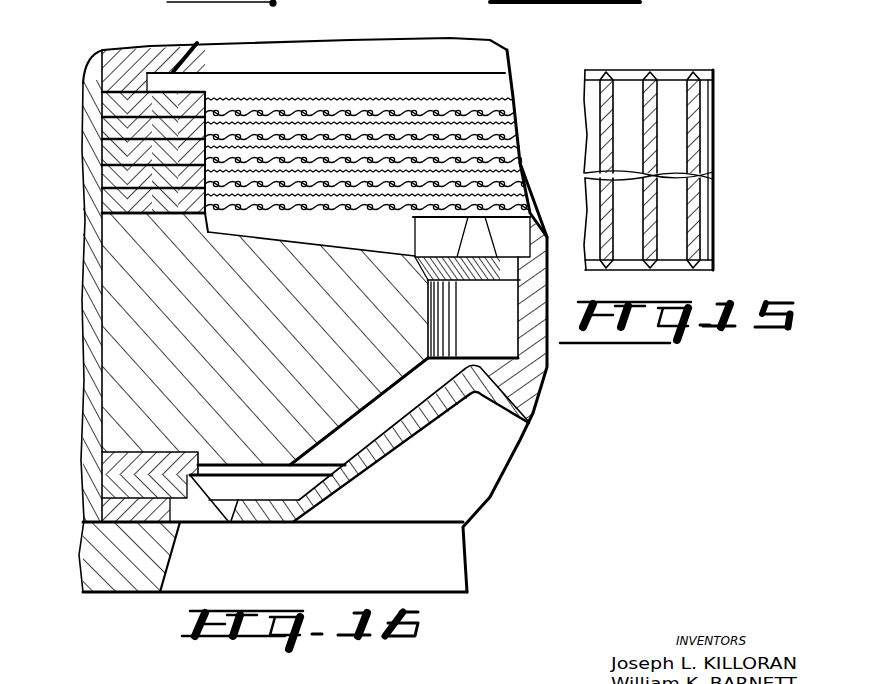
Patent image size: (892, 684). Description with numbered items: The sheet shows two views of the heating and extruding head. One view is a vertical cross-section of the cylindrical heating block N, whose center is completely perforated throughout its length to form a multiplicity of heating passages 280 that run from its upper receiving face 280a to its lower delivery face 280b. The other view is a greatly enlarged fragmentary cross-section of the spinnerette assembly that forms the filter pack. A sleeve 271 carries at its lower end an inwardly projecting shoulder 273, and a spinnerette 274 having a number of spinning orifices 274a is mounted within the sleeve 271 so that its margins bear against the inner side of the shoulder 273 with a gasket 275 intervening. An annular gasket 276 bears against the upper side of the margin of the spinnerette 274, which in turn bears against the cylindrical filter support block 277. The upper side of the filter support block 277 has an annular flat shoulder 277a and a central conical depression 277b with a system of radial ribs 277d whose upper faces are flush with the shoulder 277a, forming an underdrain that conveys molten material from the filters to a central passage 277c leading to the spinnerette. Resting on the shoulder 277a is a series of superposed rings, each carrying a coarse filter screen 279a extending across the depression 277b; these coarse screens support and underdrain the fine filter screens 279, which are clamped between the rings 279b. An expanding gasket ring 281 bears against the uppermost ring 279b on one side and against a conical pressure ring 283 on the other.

In FIG. 16, the expanding gasket ring 281 is at (110, 60).
In FIG. 16, the conical pressure ring 283 is at (168, 66).
In FIG. 16, the rings 279b is at (214, 108).
In FIG. 16, the fine filter screens 279 is at (467, 157).
In FIG. 16, the filter screen 279a is at (536, 203).
In FIG. 16, the annular flat shoulder 277a is at (125, 218).
In FIG. 16, the filter support block 277 is at (275, 339).
In FIG. 16, the radial ribs 277d is at (307, 232).
In FIG. 16, the central conical depression 277b is at (372, 254).
In FIG. 16, the central passage 277c is at (500, 348).
In FIG. 16, the sleeve 271 is at (104, 373).
In FIG. 16, the annular gasket 276 is at (147, 463).
In FIG. 16, the spinnerette 274 is at (385, 452).
In FIG. 16, the spinning orifices 274a is at (223, 523).
In FIG. 16, the inwardly projecting shoulder 273 is at (166, 566).
In FIG. 16, the gasket 275 is at (72, 550).
In FIG. 15, the heating passages 280 is at (628, 92).
In FIG. 15, the upper receiving face 280a is at (667, 90).
In FIG. 15, the lower delivery face 280b is at (683, 270).
In FIG. 15, the cylindrical heating block N is at (714, 159).